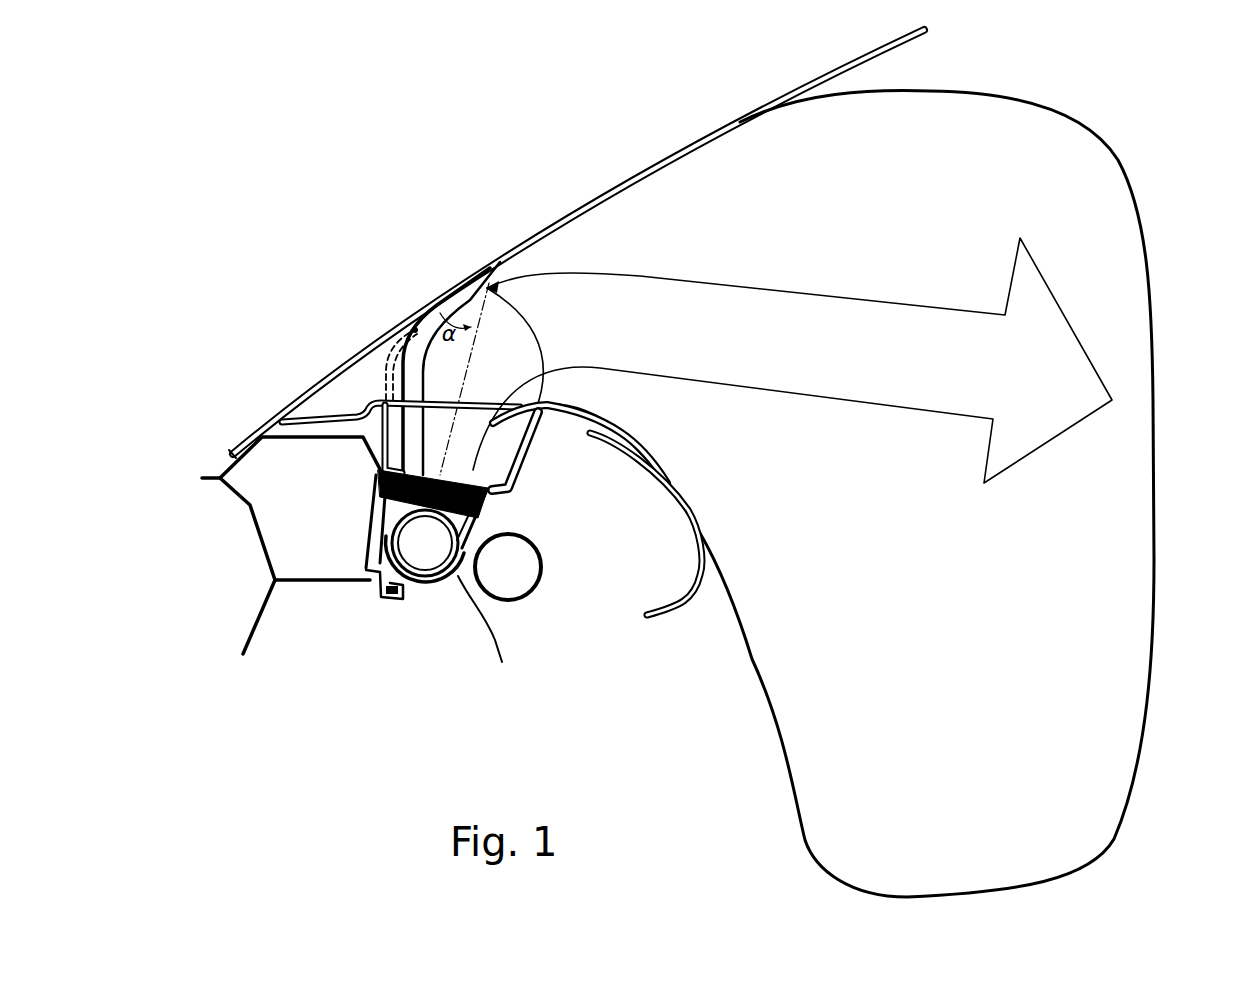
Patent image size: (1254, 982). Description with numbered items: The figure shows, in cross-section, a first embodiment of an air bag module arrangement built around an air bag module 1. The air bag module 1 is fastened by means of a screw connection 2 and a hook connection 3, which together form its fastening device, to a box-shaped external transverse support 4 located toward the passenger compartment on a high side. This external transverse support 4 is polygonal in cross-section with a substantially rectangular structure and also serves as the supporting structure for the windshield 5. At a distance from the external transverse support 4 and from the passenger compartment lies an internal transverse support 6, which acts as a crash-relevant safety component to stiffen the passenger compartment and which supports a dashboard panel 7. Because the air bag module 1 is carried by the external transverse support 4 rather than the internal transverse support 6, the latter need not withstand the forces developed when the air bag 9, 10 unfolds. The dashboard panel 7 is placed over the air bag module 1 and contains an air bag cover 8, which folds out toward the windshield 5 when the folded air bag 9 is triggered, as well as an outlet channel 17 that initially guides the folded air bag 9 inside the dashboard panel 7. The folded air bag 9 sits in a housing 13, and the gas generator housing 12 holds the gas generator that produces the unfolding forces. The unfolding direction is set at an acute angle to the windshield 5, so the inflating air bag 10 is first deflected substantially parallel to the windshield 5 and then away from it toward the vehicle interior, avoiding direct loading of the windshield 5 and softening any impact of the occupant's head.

The air bag module 1 is at (420, 634).
The screw connection 2 is at (397, 603).
The hook connection 3 is at (379, 598).
The external transverse support 4 is at (309, 585).
The windshield 5 is at (440, 298).
The internal transverse support 6 is at (527, 600).
The dashboard panel 7 is at (673, 510).
The air bag cover 8 is at (384, 368).
The folded air bag 9 is at (478, 513).
The inflating air bag 10 is at (1128, 640).
The gas generator housing 12 is at (430, 562).
The housing 13 is at (484, 640).
The outlet channel 17 is at (527, 462).